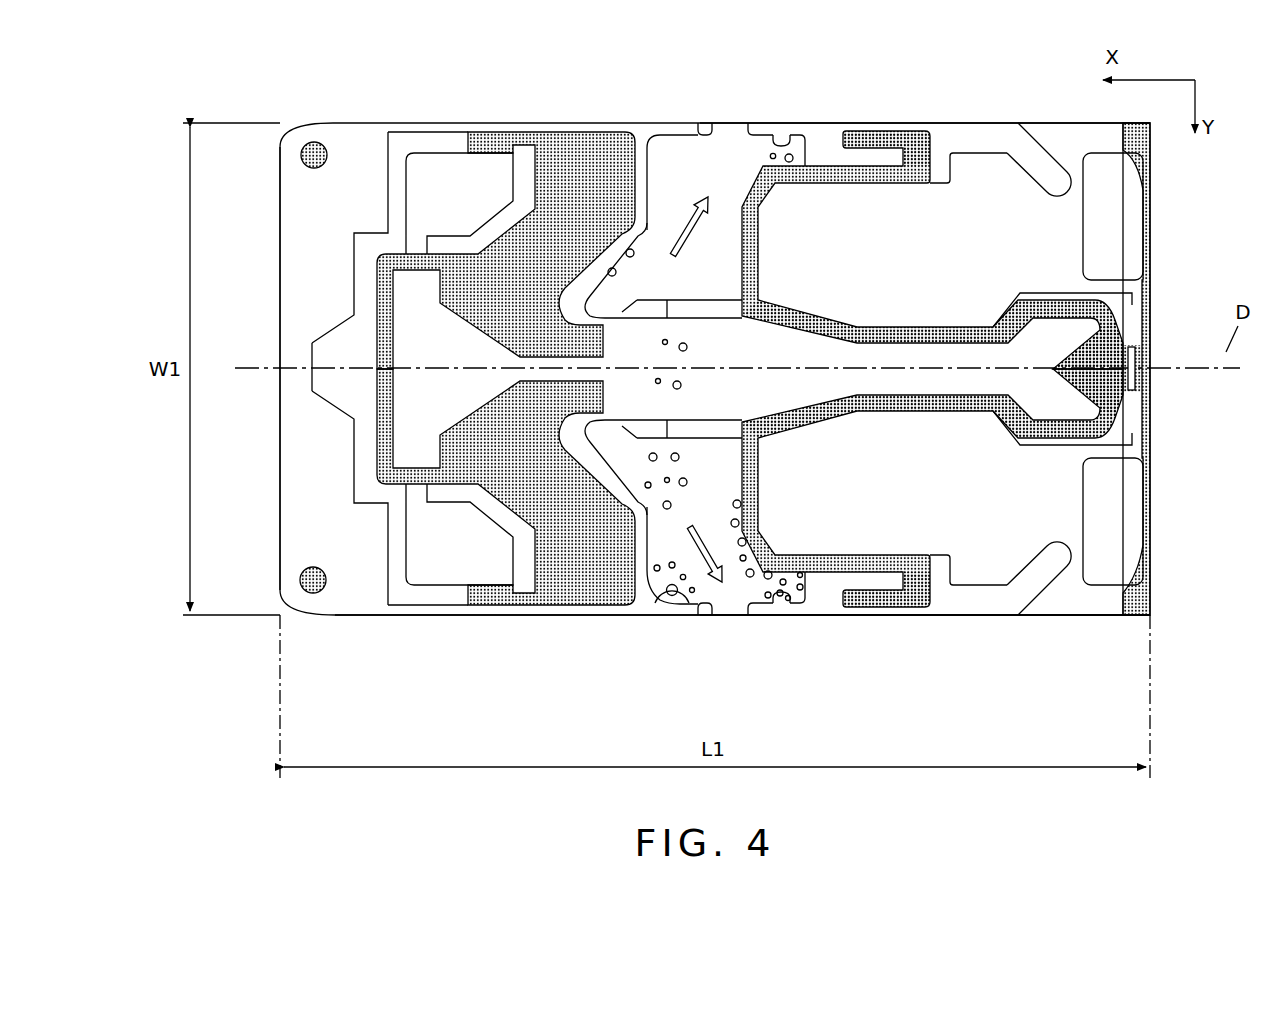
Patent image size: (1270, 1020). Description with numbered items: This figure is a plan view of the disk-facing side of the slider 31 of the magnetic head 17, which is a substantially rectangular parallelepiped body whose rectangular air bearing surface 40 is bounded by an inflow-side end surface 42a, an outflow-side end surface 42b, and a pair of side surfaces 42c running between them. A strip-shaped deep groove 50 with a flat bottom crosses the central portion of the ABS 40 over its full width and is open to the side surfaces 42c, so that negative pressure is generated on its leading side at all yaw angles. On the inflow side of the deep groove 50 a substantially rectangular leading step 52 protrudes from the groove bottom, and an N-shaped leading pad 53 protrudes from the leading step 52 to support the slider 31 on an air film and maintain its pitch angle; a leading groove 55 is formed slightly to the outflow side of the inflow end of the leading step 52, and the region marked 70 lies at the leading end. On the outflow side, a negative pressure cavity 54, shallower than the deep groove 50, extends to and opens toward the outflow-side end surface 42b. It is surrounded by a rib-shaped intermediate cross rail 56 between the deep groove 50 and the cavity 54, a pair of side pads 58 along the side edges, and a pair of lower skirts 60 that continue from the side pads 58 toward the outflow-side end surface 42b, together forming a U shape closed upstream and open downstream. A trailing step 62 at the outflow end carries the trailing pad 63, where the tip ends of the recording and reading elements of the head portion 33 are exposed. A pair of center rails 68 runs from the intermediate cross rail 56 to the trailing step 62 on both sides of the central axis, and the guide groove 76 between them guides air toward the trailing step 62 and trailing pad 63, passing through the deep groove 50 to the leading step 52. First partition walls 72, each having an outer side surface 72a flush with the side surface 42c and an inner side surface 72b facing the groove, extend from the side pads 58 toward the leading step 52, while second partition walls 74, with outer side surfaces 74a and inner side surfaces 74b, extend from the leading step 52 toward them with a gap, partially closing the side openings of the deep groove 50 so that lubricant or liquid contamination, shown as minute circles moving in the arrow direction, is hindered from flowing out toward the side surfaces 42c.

The magnetic head 17 is at (505, 92).
The slider 31 is at (1061, 622).
The head portion 33 is at (1136, 348).
The air bearing surface 40 is at (600, 158).
The inflow-side end surface 42a is at (280, 257).
The outflow-side end surface 42b is at (1150, 500).
The side surfaces 42c is at (898, 122).
The deep groove 50 is at (702, 243).
The leading step 52 is at (367, 140).
The leading pad 53 is at (588, 578).
The negative pressure cavity 54 is at (958, 217).
The leading groove 55 is at (353, 485).
The intermediate cross rail 56 is at (770, 197).
The side pads 58 is at (857, 130).
The skirts 60 is at (1028, 163).
The trailing step 62 is at (1085, 410).
The trailing pad 63 is at (1107, 385).
The center rails 68 is at (897, 327).
The third region 70 is at (485, 606).
The first partition walls 72 is at (755, 130).
The outer side surface 72a is at (778, 130).
The inner side surface 72b is at (786, 137).
The second partition walls 74 is at (698, 128).
The outer side surface 74a is at (700, 122).
The inner side surface 74b is at (693, 137).
The guide groove 76 is at (773, 395).